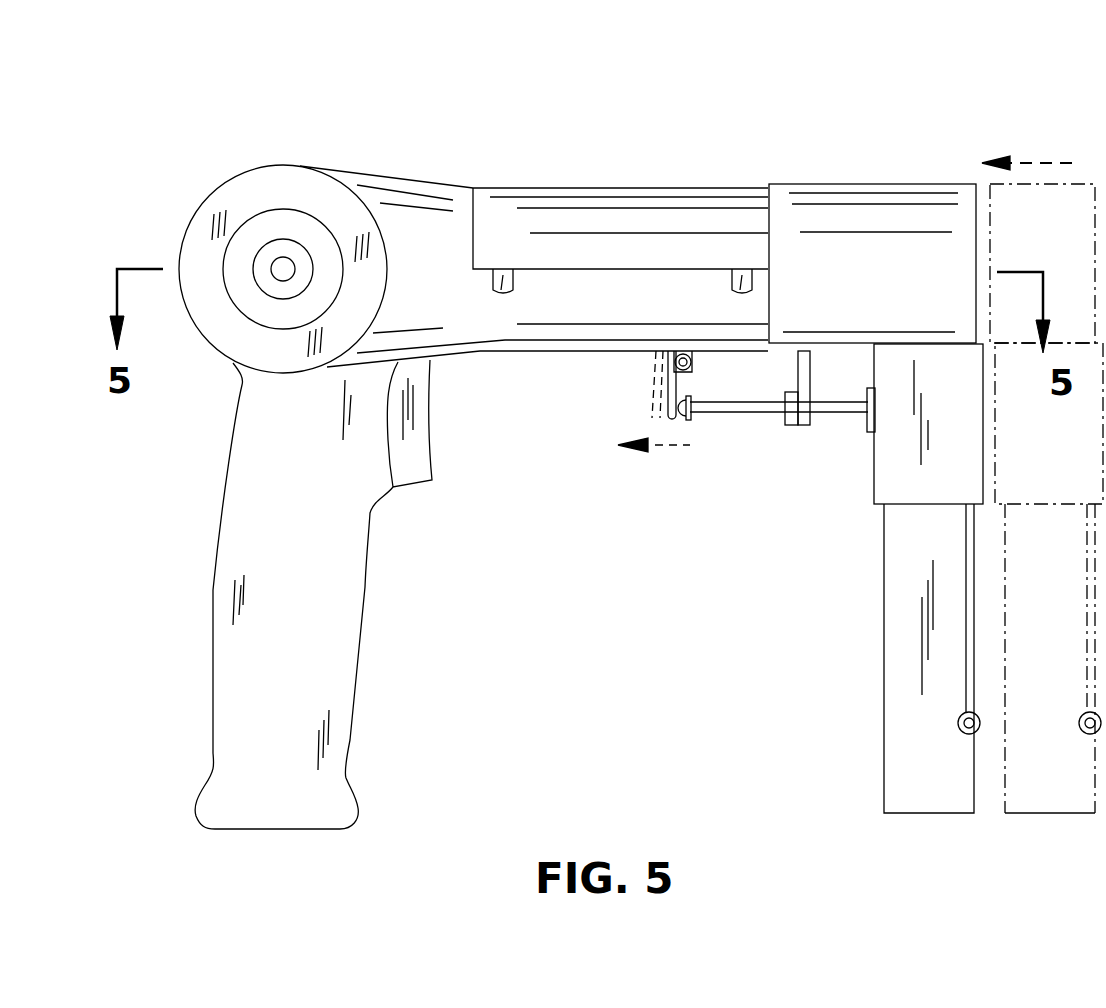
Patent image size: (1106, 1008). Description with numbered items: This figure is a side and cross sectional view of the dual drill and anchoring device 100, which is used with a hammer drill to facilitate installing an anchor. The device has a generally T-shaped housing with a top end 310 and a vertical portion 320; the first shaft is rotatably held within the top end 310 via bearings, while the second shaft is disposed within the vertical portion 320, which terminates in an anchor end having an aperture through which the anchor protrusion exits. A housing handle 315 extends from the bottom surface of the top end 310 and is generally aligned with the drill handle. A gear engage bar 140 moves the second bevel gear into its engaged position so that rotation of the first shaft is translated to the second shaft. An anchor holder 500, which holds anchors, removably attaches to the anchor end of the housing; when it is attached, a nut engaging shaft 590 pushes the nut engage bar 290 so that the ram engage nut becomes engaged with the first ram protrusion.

The dual drill and anchoring device 100 is at (907, 152).
The gear engage bar 140 is at (805, 373).
The nut engage bar 290 is at (655, 424).
The top end 310 is at (257, 196).
The housing handle 315 is at (318, 642).
The vertical portion 320 is at (603, 310).
The anchor holder 500 is at (895, 488).
The nut engaging shaft 590 is at (738, 408).